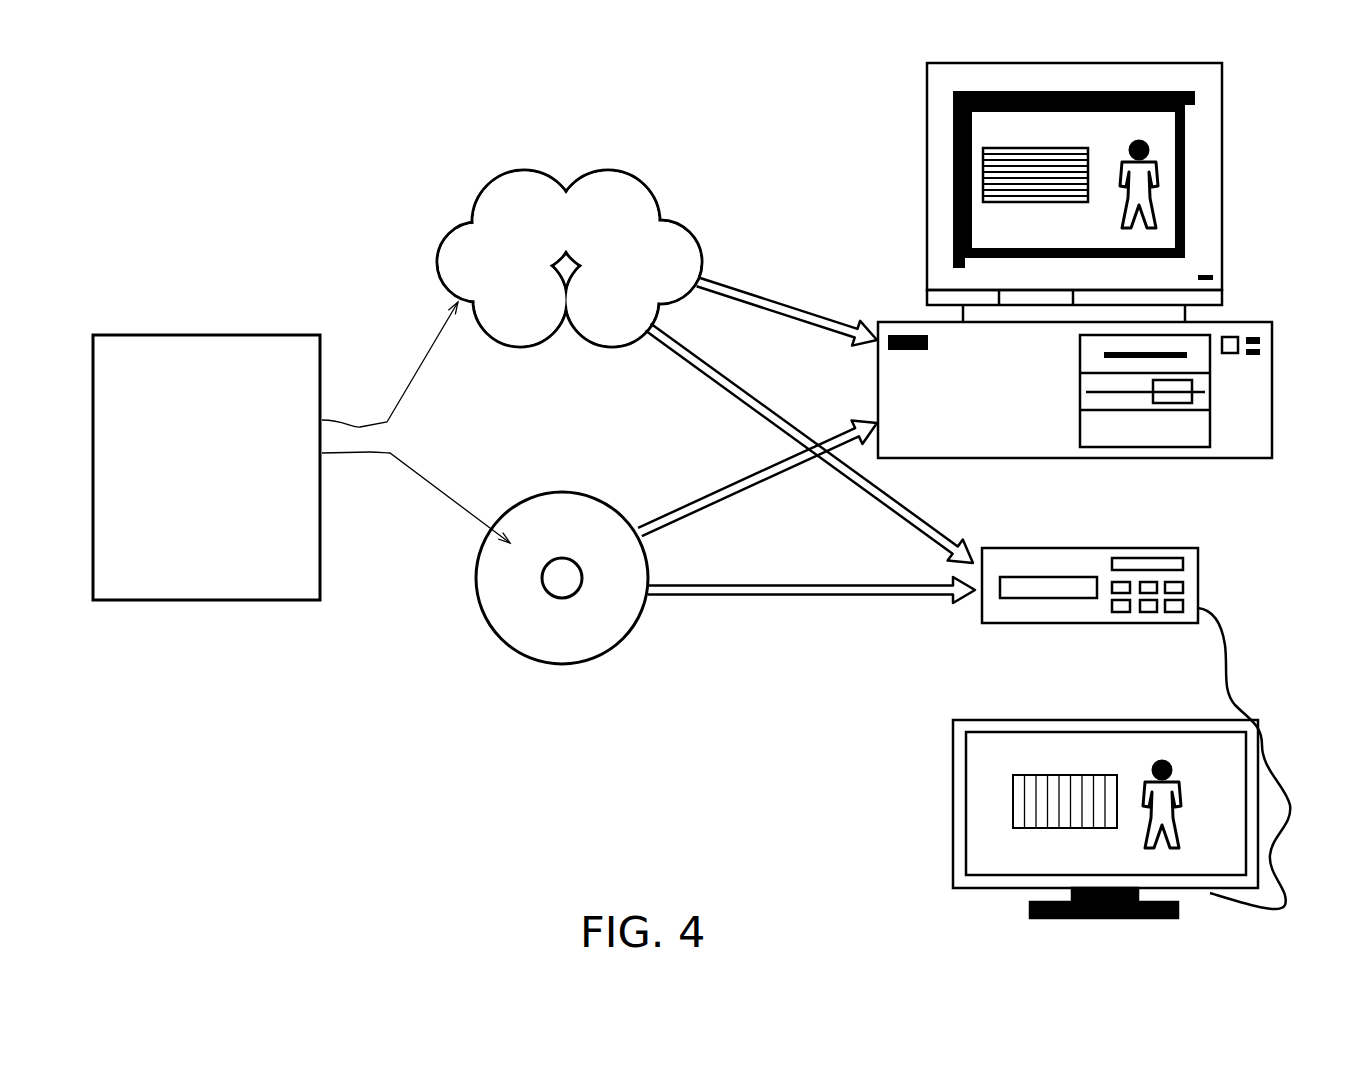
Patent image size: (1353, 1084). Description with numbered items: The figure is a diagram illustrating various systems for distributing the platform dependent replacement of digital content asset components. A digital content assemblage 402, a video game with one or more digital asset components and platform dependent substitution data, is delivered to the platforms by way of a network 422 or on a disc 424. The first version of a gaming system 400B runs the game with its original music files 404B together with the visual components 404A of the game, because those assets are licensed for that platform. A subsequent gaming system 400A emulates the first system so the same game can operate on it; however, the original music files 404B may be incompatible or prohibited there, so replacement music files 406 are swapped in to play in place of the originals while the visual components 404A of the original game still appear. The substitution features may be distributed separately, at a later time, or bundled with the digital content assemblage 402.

The digital content assemblage 402 is at (190, 600).
The network 422 is at (530, 172).
The optical disc 424 is at (582, 665).
The first version of a gaming system 400B is at (893, 322).
The original music files 404B is at (1015, 148).
The visual components 404A is at (1155, 165).
The subsequent gaming system 400A is at (1132, 548).
The replacement music files 406 is at (1037, 773).